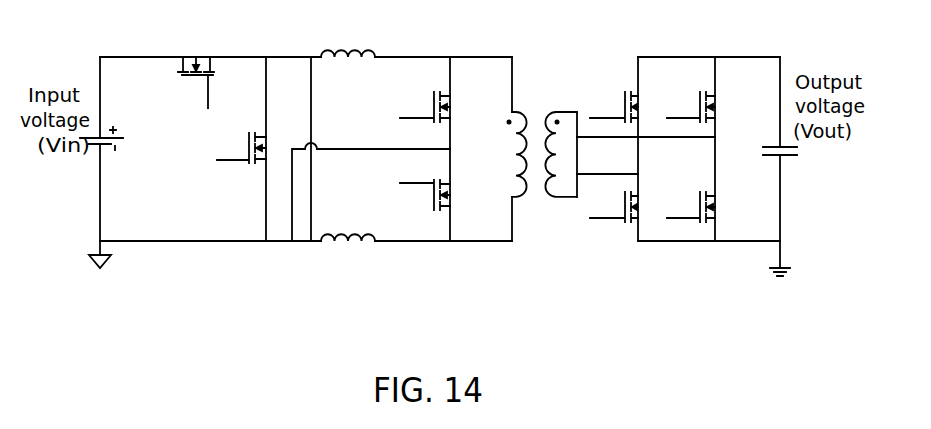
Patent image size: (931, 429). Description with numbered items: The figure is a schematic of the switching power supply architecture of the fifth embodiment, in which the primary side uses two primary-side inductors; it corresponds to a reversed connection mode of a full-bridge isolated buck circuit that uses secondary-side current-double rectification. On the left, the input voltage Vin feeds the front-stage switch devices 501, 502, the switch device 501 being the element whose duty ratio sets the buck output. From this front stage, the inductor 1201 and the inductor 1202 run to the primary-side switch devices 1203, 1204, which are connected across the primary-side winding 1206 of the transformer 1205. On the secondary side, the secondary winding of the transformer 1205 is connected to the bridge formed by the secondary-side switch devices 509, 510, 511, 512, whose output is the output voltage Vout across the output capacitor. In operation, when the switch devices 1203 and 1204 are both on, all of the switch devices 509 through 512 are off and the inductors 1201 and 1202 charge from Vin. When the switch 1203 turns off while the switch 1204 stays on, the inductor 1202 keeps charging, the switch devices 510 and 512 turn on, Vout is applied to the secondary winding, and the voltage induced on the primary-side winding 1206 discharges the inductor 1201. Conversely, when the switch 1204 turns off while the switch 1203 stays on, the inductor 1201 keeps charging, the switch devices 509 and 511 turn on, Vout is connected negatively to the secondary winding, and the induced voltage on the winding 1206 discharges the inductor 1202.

The switch device 501 is at (196, 71).
The switch device 502 is at (239, 166).
The inductor 1201 is at (348, 38).
The inductor 1202 is at (348, 259).
The primary-side switch device 1203 is at (411, 102).
The primary-side switch device 1204 is at (411, 197).
The transformer 1205 is at (545, 195).
The primary-side winding 1206 is at (497, 154).
The secondary-side switch device 509 is at (610, 102).
The secondary-side switch device 510 is at (614, 219).
The secondary-side switch device 511 is at (691, 219).
The secondary-side switch device 512 is at (684, 102).